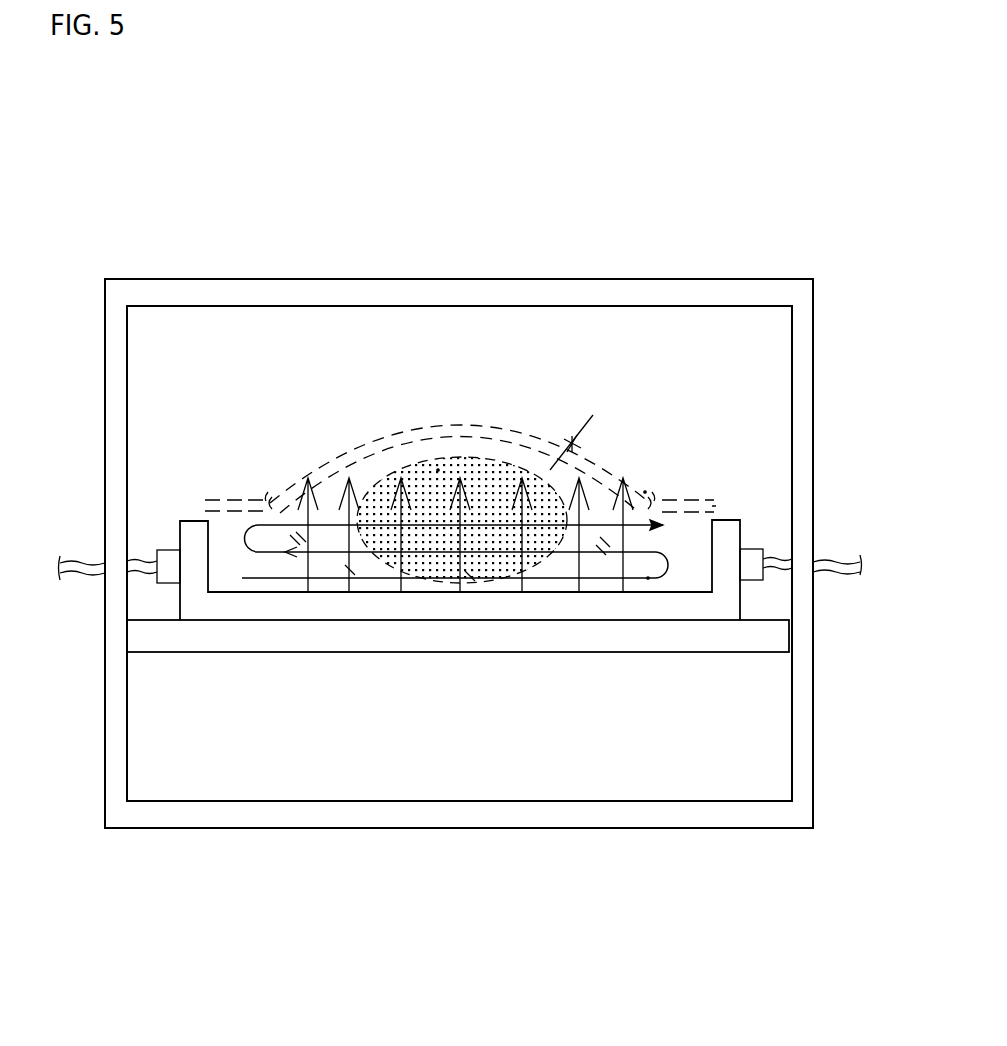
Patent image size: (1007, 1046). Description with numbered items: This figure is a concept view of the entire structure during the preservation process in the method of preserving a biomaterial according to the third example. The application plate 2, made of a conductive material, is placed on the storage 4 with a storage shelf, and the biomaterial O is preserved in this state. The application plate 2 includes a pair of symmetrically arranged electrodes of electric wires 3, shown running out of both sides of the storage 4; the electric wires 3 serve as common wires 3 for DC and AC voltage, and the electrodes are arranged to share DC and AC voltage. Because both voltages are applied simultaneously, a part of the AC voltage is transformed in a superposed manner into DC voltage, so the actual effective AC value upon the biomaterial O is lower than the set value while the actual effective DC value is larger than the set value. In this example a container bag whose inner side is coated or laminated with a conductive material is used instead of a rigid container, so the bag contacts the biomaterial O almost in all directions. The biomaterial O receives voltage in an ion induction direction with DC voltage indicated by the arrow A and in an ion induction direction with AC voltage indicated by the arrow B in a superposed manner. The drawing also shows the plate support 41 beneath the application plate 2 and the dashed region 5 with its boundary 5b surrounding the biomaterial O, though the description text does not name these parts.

The application plate 2 is at (205, 605).
The electric wires 3 is at (80, 577).
The storage 4 is at (202, 285).
The support plate 41 is at (223, 631).
The heated region 5 is at (506, 428).
The heated region boundary 5b is at (575, 445).
The biomaterial O is at (438, 470).
The arrow A is at (645, 492).
The arrow B is at (648, 578).